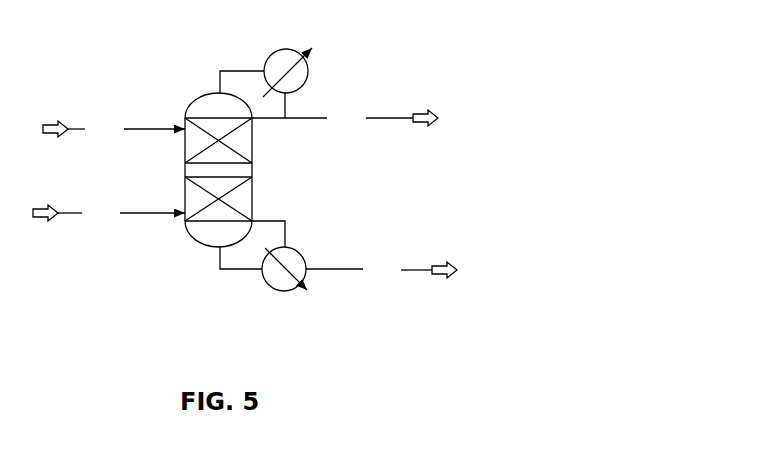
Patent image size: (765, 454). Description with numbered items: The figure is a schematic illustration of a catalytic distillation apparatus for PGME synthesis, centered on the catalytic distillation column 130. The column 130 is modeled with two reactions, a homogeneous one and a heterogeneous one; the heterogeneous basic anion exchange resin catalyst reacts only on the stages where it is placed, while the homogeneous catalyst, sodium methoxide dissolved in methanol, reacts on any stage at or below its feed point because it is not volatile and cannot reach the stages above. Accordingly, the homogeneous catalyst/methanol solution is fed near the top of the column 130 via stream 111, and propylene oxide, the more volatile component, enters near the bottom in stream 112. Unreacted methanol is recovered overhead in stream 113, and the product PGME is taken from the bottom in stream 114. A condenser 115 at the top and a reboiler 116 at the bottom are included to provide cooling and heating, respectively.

The stream 111 is at (114, 129).
The stream 112 is at (109, 212).
The stream 113 is at (345, 117).
The stream 114 is at (381, 270).
The condenser 115 is at (322, 65).
The reboiler 116 is at (318, 313).
The catalytic distillation column 130 is at (218, 170).